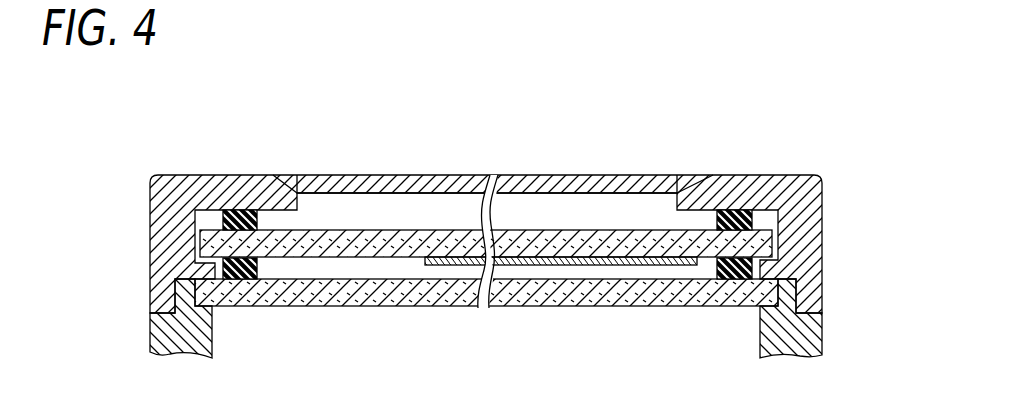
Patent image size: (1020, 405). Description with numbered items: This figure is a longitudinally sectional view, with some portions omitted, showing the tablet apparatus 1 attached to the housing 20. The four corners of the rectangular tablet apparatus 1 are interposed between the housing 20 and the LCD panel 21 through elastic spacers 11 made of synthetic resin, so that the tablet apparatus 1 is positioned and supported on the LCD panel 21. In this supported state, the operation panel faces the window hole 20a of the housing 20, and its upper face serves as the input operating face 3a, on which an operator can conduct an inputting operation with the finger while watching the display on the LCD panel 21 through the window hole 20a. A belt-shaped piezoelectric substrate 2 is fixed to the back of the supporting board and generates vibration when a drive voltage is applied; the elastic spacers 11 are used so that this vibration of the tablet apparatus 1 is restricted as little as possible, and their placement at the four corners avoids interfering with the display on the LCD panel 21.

The tablet apparatus 1 is at (486, 243).
The piezoelectric substrate 2 is at (598, 266).
The input operating face 3a is at (377, 228).
The elastic spacer 11 is at (240, 220).
The housing 20 is at (163, 258).
The window hole 20a is at (538, 188).
The LCD panel 21 is at (648, 308).